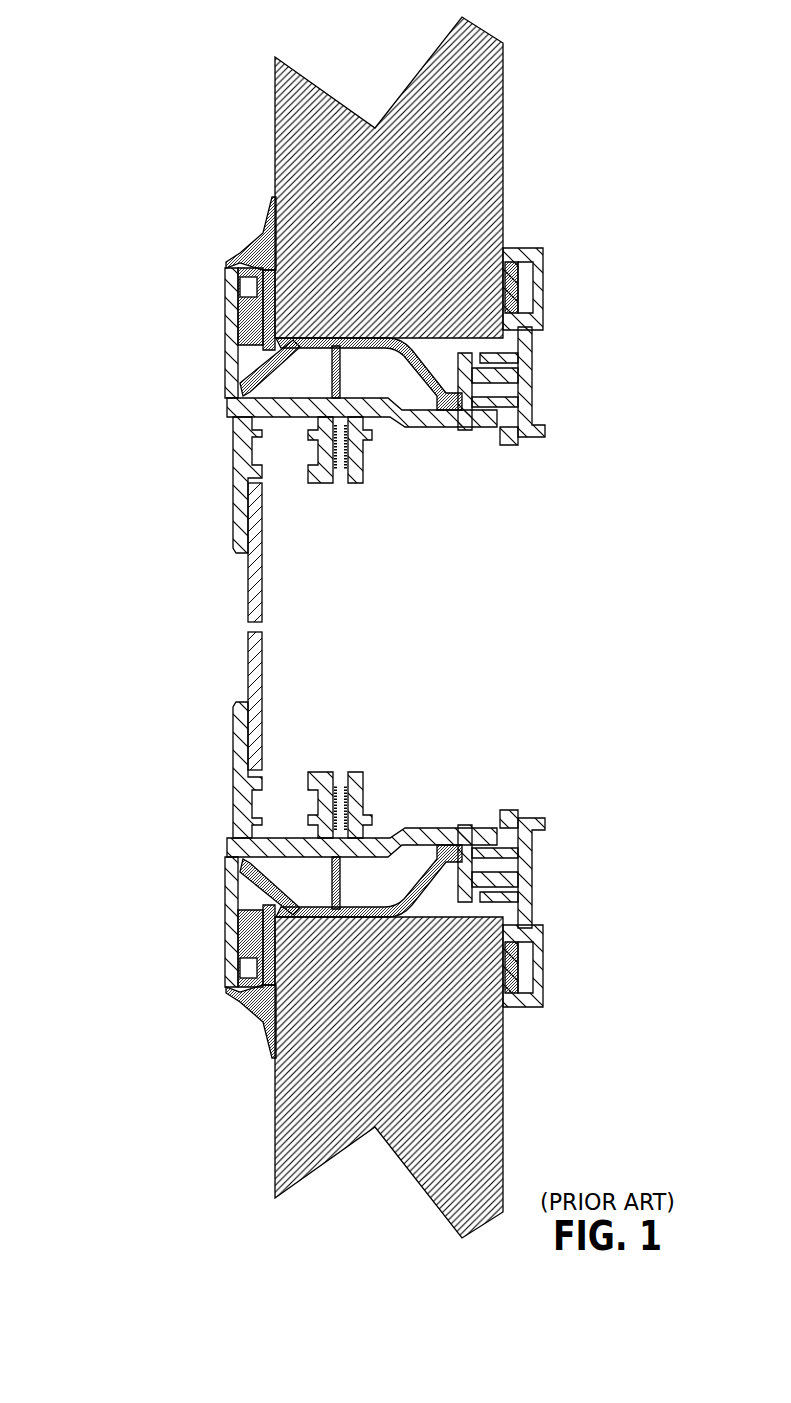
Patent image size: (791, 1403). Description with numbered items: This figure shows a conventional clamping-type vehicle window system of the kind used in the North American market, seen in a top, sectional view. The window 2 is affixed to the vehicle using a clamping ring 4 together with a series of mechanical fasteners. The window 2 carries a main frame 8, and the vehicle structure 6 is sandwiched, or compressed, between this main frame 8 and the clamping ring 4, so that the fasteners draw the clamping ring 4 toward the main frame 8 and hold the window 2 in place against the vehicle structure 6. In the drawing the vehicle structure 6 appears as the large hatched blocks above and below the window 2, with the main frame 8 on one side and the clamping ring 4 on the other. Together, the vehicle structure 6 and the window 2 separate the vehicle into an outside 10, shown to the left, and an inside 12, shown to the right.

The window 2 is at (248, 570).
The clamping ring 4 is at (545, 815).
The vehicle structure 6 is at (367, 262).
The main frame 8 is at (229, 456).
The outside 10 is at (80, 716).
The inside 12 is at (360, 616).